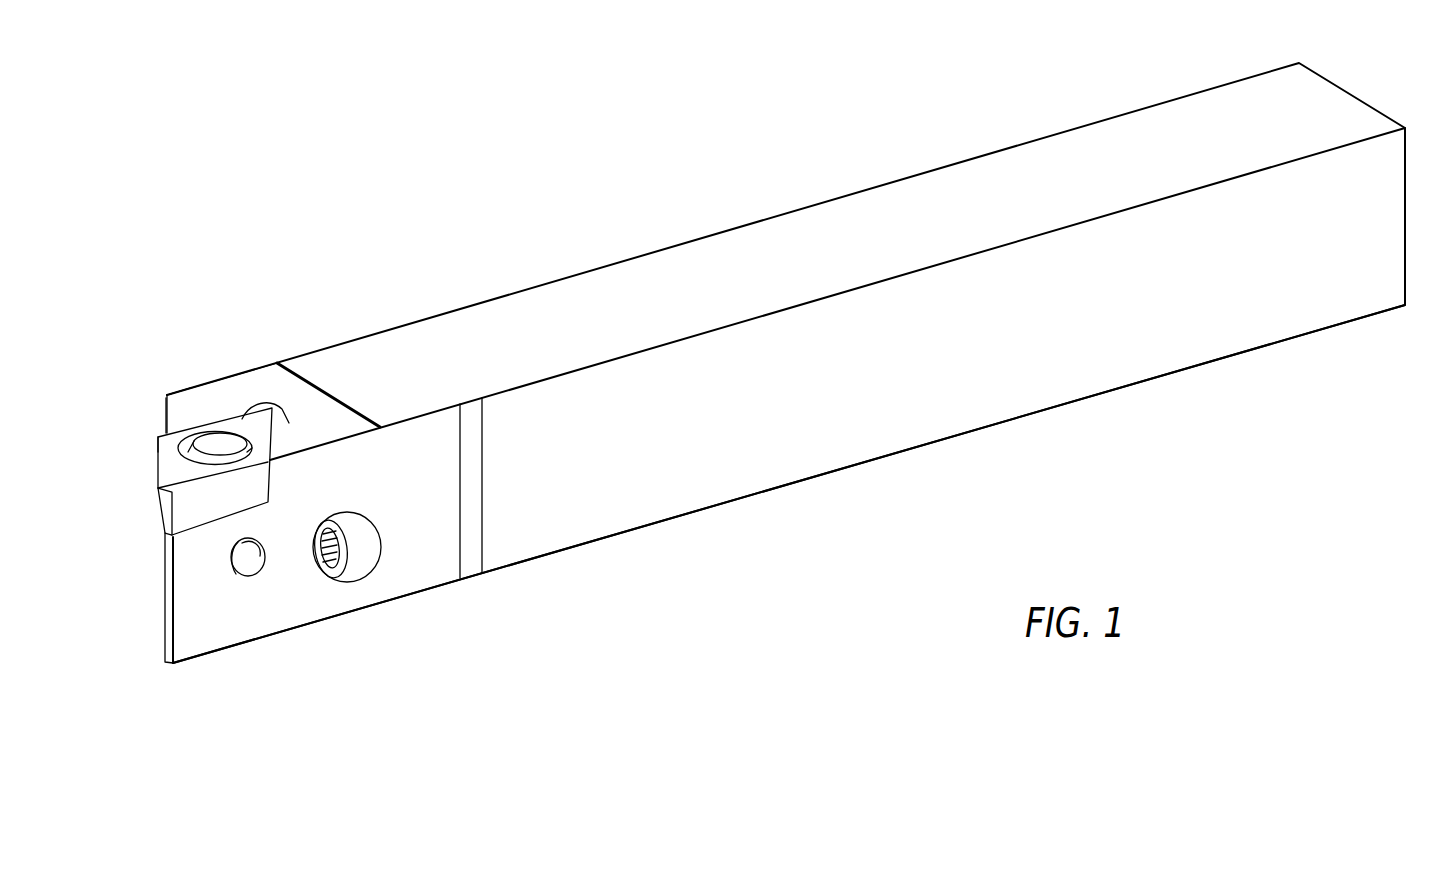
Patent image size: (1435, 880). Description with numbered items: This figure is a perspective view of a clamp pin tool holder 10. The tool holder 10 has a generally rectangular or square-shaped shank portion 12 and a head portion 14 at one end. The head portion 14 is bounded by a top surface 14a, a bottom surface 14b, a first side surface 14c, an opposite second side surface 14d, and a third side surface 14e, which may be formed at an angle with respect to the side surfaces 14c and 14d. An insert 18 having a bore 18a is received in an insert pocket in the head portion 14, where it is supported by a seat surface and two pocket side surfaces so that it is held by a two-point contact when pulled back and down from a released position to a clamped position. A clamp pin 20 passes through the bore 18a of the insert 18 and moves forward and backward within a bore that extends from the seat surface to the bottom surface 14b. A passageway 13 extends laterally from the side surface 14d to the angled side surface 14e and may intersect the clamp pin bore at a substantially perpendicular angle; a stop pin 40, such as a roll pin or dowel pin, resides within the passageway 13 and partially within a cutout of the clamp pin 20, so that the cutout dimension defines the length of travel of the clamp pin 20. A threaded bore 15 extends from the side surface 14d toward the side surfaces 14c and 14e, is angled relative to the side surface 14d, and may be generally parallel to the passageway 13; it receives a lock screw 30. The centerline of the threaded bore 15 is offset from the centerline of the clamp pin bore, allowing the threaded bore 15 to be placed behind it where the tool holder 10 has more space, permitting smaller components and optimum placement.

The clamp pin tool holder 10 is at (458, 103).
The shank portion 12 is at (1149, 90).
The passageway 13 is at (248, 562).
The head portion 14 is at (253, 352).
The top surface 14a is at (232, 393).
The bottom surface 14b is at (294, 628).
The first side surface 14c is at (190, 387).
The second side surface 14d is at (408, 492).
The third side surface 14e is at (166, 408).
The threaded bore 15 is at (364, 553).
The insert 18 is at (146, 477).
The bore 18a is at (163, 431).
The clamp pin 20 is at (215, 433).
The lock screw 30 is at (332, 583).
The stop pin 40 is at (237, 576).